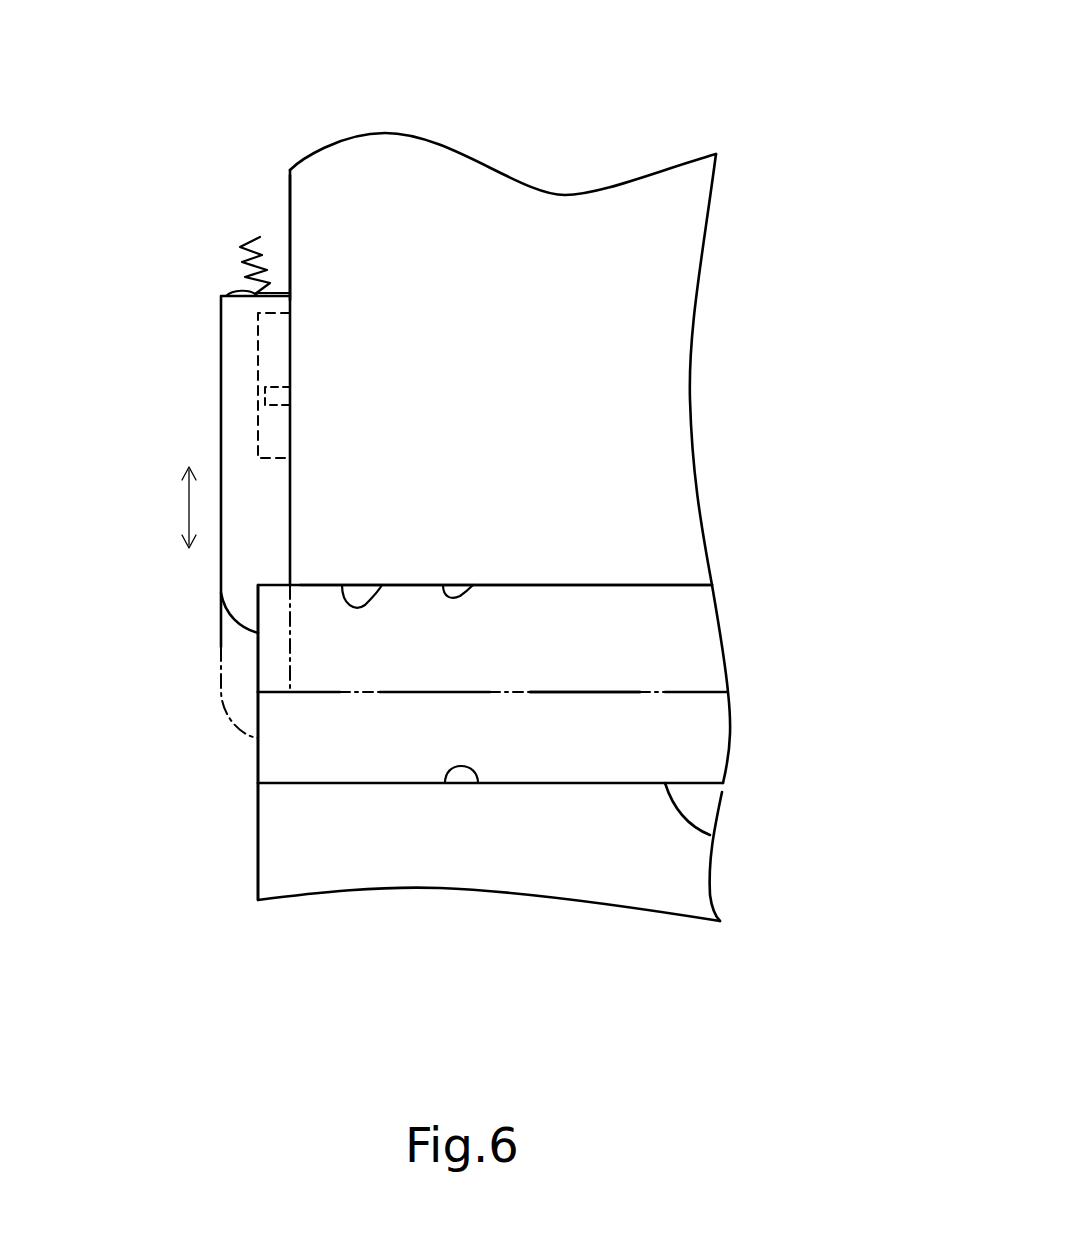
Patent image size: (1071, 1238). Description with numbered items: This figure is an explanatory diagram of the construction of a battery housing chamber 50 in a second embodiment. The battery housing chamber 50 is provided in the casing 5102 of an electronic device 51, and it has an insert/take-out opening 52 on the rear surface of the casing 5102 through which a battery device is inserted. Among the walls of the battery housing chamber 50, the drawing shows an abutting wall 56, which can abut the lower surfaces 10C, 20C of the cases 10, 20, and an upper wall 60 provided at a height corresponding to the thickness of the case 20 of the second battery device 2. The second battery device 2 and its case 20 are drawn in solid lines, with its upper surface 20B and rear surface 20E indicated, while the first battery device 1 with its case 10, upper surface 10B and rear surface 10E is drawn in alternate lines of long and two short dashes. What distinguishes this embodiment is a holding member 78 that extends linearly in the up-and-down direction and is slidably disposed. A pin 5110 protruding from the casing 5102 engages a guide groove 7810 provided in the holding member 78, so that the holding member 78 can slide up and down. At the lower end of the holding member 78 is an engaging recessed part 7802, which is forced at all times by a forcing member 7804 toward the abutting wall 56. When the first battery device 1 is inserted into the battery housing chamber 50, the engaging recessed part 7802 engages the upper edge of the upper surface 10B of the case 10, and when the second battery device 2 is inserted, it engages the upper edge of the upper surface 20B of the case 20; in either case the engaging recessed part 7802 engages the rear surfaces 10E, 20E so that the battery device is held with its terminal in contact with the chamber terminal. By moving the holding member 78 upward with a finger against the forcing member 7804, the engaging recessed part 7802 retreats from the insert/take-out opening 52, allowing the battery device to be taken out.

The battery housing chamber 50 is at (643, 196).
The electronic device 51 is at (183, 211).
The casing 5102 is at (290, 192).
The forcing member 7804 is at (233, 260).
The holding member 78 is at (217, 386).
The engaging recessed part 7802 is at (260, 608).
The guide groove 7810 is at (275, 318).
The pin 5110 is at (279, 386).
The second battery device 2 is at (544, 593).
The case 20 is at (655, 585).
The upper surface 20B is at (578, 585).
The rear surface 20E is at (258, 678).
The first battery device 1 is at (552, 752).
The case 10 is at (627, 692).
The upper surface 10B is at (573, 692).
The rear surface 10E is at (258, 768).
The lower surface 10C is at (588, 852).
The lower surface 20C is at (710, 835).
The insert/take-out opening 52 is at (382, 585).
The upper wall 60 is at (473, 585).
The abutting wall 56 is at (478, 783).